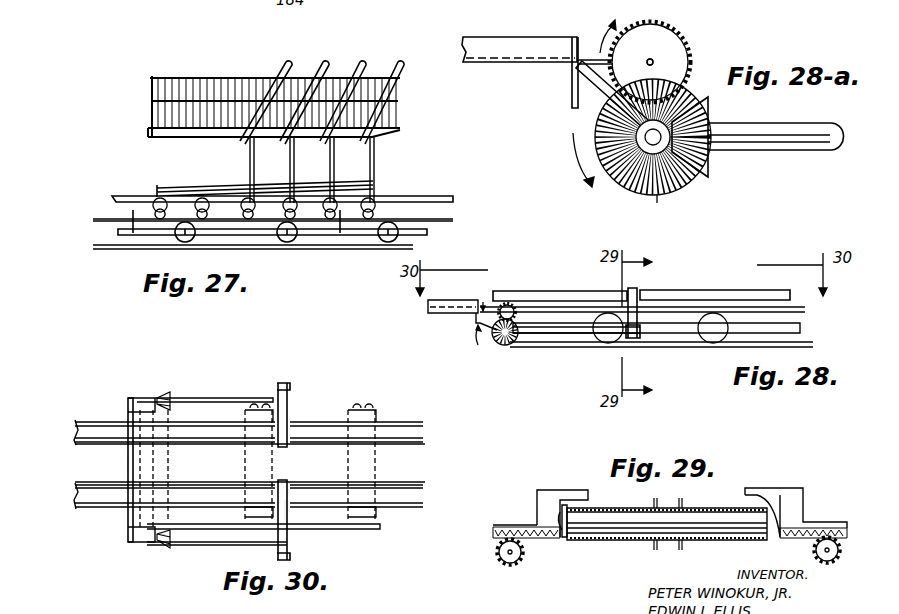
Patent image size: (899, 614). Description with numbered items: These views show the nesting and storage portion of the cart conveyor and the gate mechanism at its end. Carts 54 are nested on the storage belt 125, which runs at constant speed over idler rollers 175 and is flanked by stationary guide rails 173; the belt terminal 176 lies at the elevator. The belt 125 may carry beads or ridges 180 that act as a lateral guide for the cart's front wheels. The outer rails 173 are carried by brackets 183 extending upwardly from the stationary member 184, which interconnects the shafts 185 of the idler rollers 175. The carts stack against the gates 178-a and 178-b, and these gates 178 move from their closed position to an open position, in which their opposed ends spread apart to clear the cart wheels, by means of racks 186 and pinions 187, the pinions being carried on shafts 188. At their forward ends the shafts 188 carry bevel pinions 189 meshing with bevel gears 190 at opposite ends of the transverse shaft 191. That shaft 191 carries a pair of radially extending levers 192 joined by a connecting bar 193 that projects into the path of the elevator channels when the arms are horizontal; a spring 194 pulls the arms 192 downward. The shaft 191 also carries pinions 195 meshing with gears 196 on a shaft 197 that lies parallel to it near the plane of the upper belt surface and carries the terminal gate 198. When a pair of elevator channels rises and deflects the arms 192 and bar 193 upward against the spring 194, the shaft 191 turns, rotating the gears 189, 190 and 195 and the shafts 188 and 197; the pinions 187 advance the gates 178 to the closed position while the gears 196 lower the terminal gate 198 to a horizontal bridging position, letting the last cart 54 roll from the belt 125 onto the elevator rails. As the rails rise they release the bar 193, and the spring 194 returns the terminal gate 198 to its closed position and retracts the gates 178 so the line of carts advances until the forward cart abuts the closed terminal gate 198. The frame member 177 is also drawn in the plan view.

In FIG. 27, the cart 54 is at (182, 78).
In FIG. 27, the storage belt 125 is at (452, 219).
In FIG. 27, the stationary guide rail 173 is at (446, 195).
In FIG. 28, the stationary guide rail 173 is at (542, 292).
In FIG. 30, the stationary guide rail 173 is at (418, 418).
In FIG. 27, the idler roller 175 is at (290, 243).
In FIG. 28, the belt terminal 176 is at (513, 347).
In FIG. 30, the belt terminal 176 is at (170, 463).
In FIG. 29, the belt terminal 176 is at (757, 528).
In FIG. 30, the frame member 177 is at (128, 465).
In FIG. 28, the gate 178 is at (637, 291).
In FIG. 30, the gate 178-a is at (287, 430).
In FIG. 29, the gate 178-a is at (538, 503).
In FIG. 30, the gate 178-b is at (285, 515).
In FIG. 29, the gate 178-b is at (803, 500).
In FIG. 30, the bead or ridge 180 is at (424, 445).
In FIG. 29, the bead or ridge 180 is at (692, 548).
In FIG. 29, the bracket 183 is at (566, 504).
In FIG. 27, the stationary member 184 is at (430, 234).
In FIG. 29, the shaft 185 is at (561, 530).
In FIG. 29, the rack 186 is at (537, 521).
In FIG. 30, the pinion 187 is at (288, 390).
In FIG. 29, the pinion 187 is at (515, 567).
In FIG. 28A, the shaft 188 is at (797, 127).
In FIG. 28, the shaft 188 is at (587, 333).
In FIG. 30, the shaft 188 is at (203, 547).
In FIG. 29, the shaft 188 is at (500, 556).
In FIG. 28A, the bevel pinion 189 is at (707, 103).
In FIG. 30, the bevel pinion 189 is at (162, 552).
In FIG. 28A, the bevel gear 190 is at (680, 180).
In FIG. 30, the bevel gear 190 is at (145, 527).
In FIG. 28A, the transverse shaft 191 is at (620, 182).
In FIG. 28A, the lever 192 is at (592, 88).
In FIG. 30, the lever 192 is at (135, 398).
In FIG. 30, the connecting bar 193 is at (127, 407).
In FIG. 28A, the spring 194 is at (603, 105).
In FIG. 28A, the pinion 195 is at (642, 208).
In FIG. 30, the pinion 195 is at (172, 408).
In FIG. 28A, the gear 196 is at (662, 24).
In FIG. 28A, the shaft 197 is at (657, 62).
In FIG. 28A, the terminal gate 198 is at (592, 48).